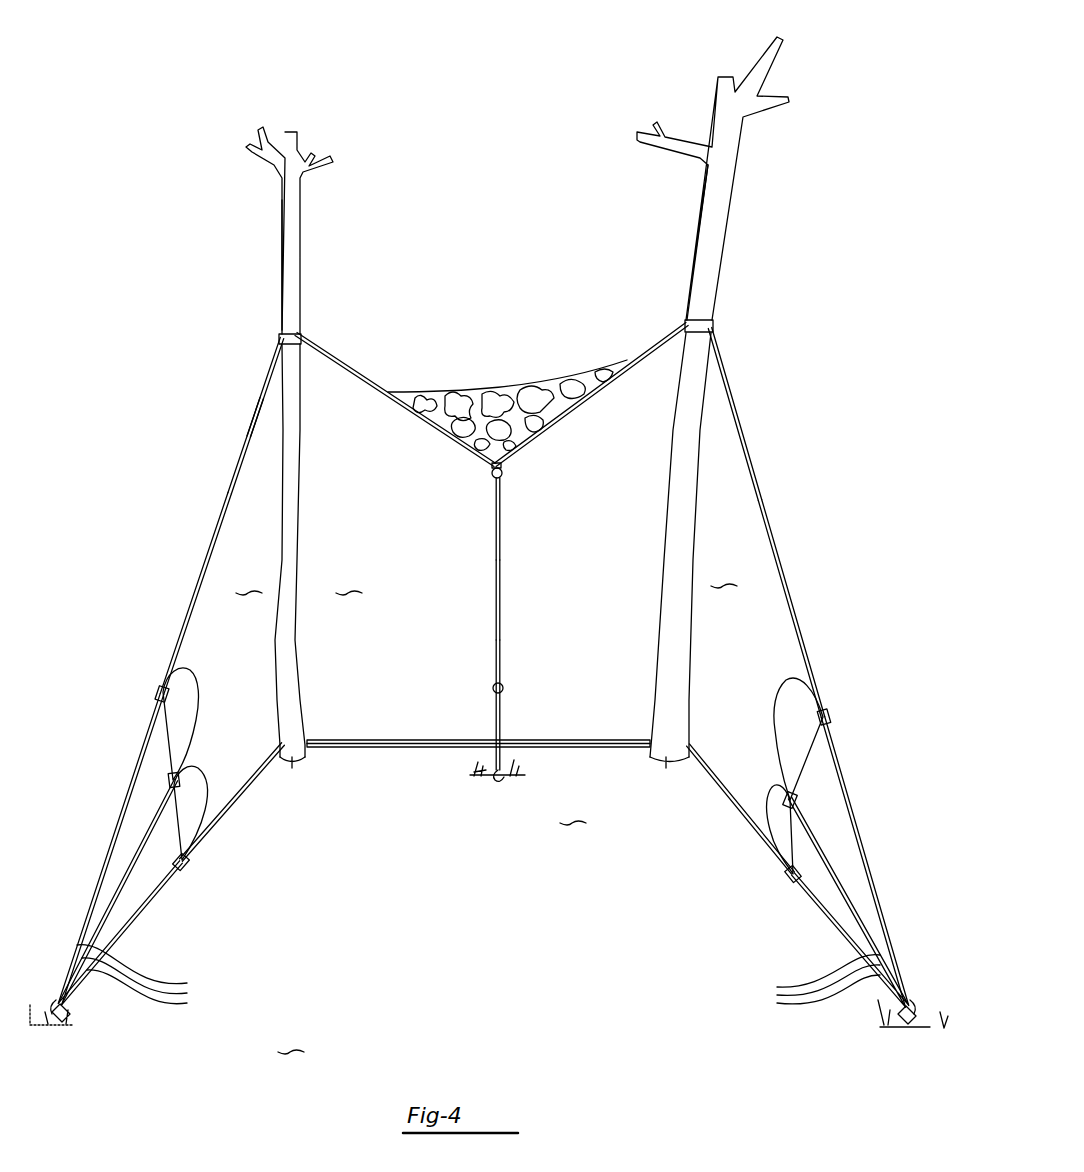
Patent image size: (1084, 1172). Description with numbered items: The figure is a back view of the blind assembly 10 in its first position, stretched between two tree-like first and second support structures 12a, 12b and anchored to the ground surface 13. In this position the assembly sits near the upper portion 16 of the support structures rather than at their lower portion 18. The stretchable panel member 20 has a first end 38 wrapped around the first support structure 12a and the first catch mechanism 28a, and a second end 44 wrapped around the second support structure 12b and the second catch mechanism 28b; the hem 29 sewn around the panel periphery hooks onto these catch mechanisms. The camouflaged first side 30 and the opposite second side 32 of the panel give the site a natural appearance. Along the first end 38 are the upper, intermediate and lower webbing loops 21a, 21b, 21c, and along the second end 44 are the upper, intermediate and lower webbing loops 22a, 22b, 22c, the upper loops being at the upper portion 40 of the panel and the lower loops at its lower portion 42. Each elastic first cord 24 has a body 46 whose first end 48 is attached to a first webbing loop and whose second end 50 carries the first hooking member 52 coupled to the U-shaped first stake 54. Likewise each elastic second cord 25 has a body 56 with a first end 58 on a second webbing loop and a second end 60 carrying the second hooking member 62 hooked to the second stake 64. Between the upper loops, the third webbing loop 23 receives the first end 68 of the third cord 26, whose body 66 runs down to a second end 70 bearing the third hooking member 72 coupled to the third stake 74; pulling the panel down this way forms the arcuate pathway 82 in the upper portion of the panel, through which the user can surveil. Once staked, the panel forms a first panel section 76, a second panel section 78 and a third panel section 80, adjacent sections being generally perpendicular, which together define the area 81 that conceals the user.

The blind assembly 10 is at (562, 322).
The first support structure 12a is at (773, 82).
The second support structure 12b is at (238, 128).
The ground surface 13 is at (480, 1029).
The upper portion 16 is at (287, 237).
The lower portion 18 is at (295, 763).
The panel member 20 is at (243, 410).
The upper webbing loop 21a is at (829, 720).
The intermediate webbing loop 21b is at (780, 800).
The lower webbing loop 21c is at (786, 874).
The upper webbing loop 22a is at (158, 693).
The intermediate webbing loop 22b is at (185, 782).
The lower webbing loop 22c is at (186, 866).
The third webbing loop 23 is at (490, 470).
The first cord 24 is at (812, 822).
The second cord 25 is at (85, 897).
The third cord 26 is at (505, 620).
The first catch mechanism 28a is at (712, 326).
The second catch mechanism 28b is at (282, 338).
The hem 29 is at (752, 442).
The first side 30 is at (445, 405).
The second side 32 is at (255, 465).
The first end 38 is at (742, 408).
The upper portion 40 is at (335, 358).
The lower portion 42 is at (357, 748).
The second end 44 is at (200, 540).
The body 46 is at (840, 868).
The first end 48 is at (800, 808).
The second end 50 is at (816, 979).
The first hooking member 52 is at (918, 1005).
The first stake 54 is at (886, 1017).
The body 56 is at (130, 857).
The first end 58 is at (168, 787).
The second end 60 is at (144, 974).
The second hooking member 62 is at (50, 1012).
The second stake 64 is at (62, 1020).
The body 66 is at (494, 578).
The first end 68 is at (503, 530).
The second end 70 is at (503, 718).
The third hooking member 72 is at (495, 778).
The third stake 74 is at (473, 768).
The first panel section 76 is at (724, 573).
The second panel section 78 is at (349, 580).
The third panel section 80 is at (249, 580).
The area 81 is at (528, 800).
The arcuate pathway 82 is at (512, 385).